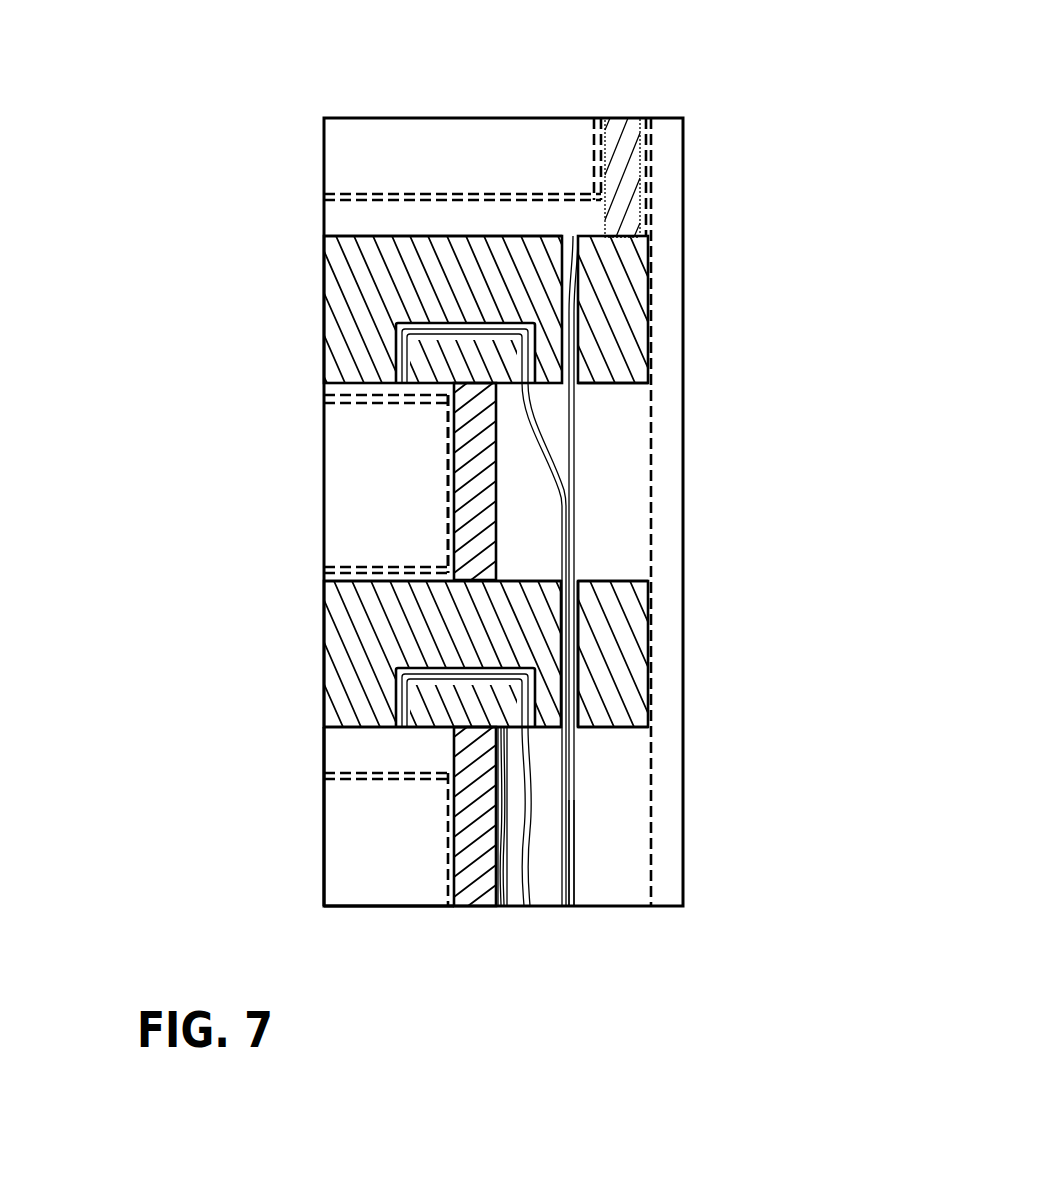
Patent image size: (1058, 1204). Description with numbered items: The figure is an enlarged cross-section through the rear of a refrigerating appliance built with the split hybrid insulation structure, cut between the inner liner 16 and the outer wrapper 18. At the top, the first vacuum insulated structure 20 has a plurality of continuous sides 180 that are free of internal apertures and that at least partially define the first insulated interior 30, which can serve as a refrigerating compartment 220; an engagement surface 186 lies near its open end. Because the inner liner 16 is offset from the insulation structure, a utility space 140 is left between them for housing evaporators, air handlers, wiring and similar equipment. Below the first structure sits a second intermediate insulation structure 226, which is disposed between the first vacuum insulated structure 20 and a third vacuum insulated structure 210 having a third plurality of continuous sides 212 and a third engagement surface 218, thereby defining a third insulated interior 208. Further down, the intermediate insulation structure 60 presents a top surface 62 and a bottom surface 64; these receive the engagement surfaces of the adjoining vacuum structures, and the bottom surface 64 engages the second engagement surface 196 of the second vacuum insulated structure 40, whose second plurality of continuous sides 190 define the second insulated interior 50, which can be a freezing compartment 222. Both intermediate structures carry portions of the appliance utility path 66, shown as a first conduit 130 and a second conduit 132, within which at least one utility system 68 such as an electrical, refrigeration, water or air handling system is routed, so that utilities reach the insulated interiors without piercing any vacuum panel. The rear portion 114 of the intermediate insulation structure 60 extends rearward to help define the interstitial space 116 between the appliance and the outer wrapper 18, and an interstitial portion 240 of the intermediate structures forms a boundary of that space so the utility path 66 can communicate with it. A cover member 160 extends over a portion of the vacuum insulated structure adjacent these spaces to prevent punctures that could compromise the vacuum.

The inner liner 16 is at (348, 194).
The outer wrapper 18 is at (657, 150).
The first vacuum insulated structure 20 is at (613, 116).
The first insulated interior 30 is at (377, 160).
The second vacuum insulated structure 40 is at (478, 908).
The second insulated interior 50 is at (373, 850).
The intermediate insulation structure 60 is at (322, 670).
The top surface 62 is at (372, 580).
The bottom surface 64 is at (357, 727).
The appliance utility path 66 is at (583, 628).
The utility system 68 is at (583, 858).
The rear portion 114 is at (612, 330).
The interstitial space 116 is at (612, 488).
The first conduit 130 is at (582, 702).
The second conduit 132 is at (422, 668).
The utility space 140 is at (345, 218).
The cover member 160 is at (507, 888).
The continuous sides 180 is at (604, 157).
The engagement surface 186 is at (617, 233).
The second plurality of continuous sides 190 is at (463, 809).
The second engagement surface 196 is at (455, 730).
The third insulated interior 208 is at (344, 429).
The third vacuum insulated structure 210 is at (448, 510).
The third plurality of continuous sides 212 is at (470, 458).
The third engagement surface 218 is at (452, 404).
The refrigerating compartment 220 is at (418, 170).
The freezing compartment 222 is at (387, 885).
The second intermediate insulation structure 226 is at (322, 297).
The interstitial portion 240 is at (617, 392).